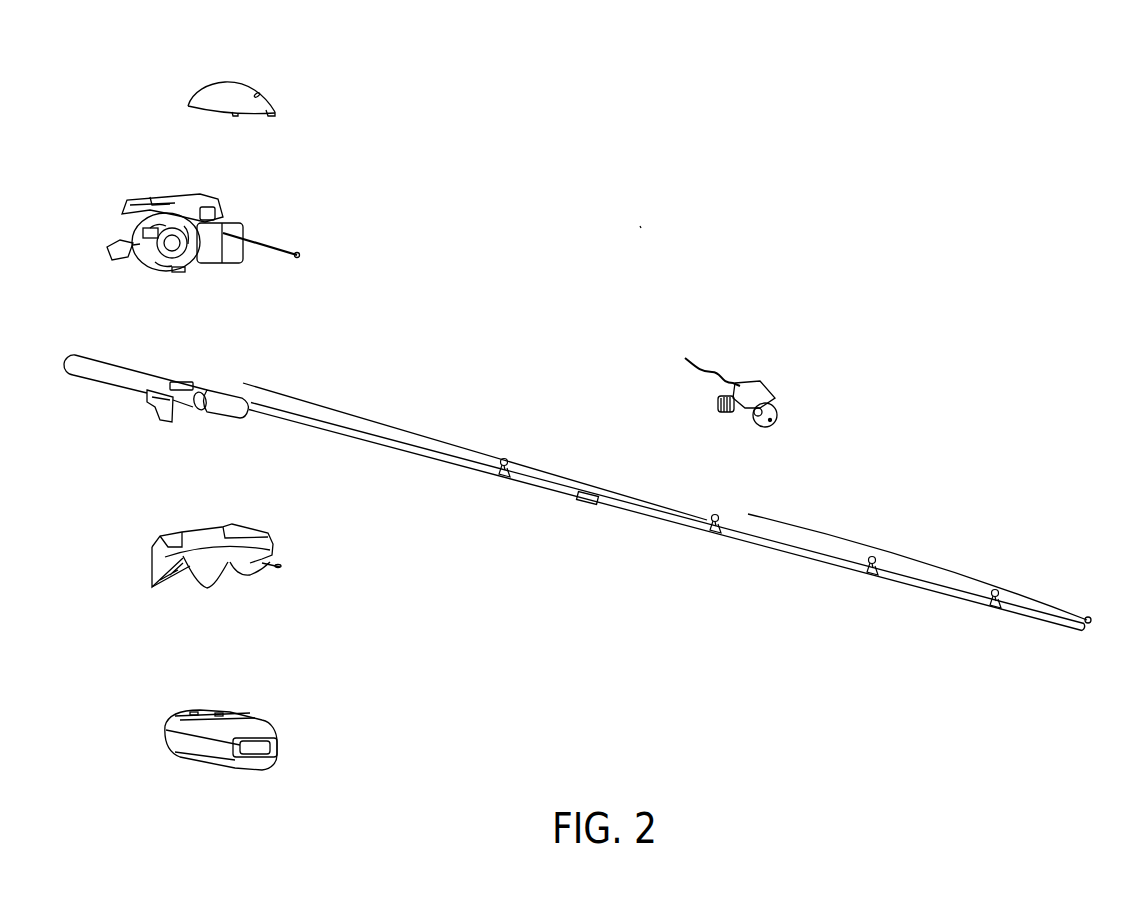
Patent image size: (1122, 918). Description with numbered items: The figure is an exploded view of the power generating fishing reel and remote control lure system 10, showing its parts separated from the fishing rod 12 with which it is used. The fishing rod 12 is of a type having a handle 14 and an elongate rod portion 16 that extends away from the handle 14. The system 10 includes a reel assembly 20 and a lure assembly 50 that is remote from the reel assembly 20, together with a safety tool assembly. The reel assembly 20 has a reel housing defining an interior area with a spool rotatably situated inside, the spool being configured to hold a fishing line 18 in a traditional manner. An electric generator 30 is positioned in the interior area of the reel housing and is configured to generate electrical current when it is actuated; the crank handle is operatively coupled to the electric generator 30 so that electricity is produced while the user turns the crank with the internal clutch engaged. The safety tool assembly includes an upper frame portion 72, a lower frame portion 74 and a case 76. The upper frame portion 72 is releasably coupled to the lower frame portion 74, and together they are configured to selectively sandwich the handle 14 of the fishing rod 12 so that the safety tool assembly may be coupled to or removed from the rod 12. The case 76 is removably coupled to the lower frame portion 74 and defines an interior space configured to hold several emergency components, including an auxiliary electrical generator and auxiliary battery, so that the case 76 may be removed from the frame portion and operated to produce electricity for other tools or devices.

The fishing reel and remote control lure system 10 is at (640, 230).
The fishing rod 12 is at (447, 515).
The handle 14 is at (87, 368).
The elongate rod portion 16 is at (627, 514).
The fishing line 18 is at (373, 420).
The reel assembly 20 is at (233, 202).
The electric generator 30 is at (173, 270).
The lure assembly 50 is at (772, 378).
The upper frame portion 72 is at (230, 89).
The lower frame portion 74 is at (163, 557).
The case 76 is at (170, 742).